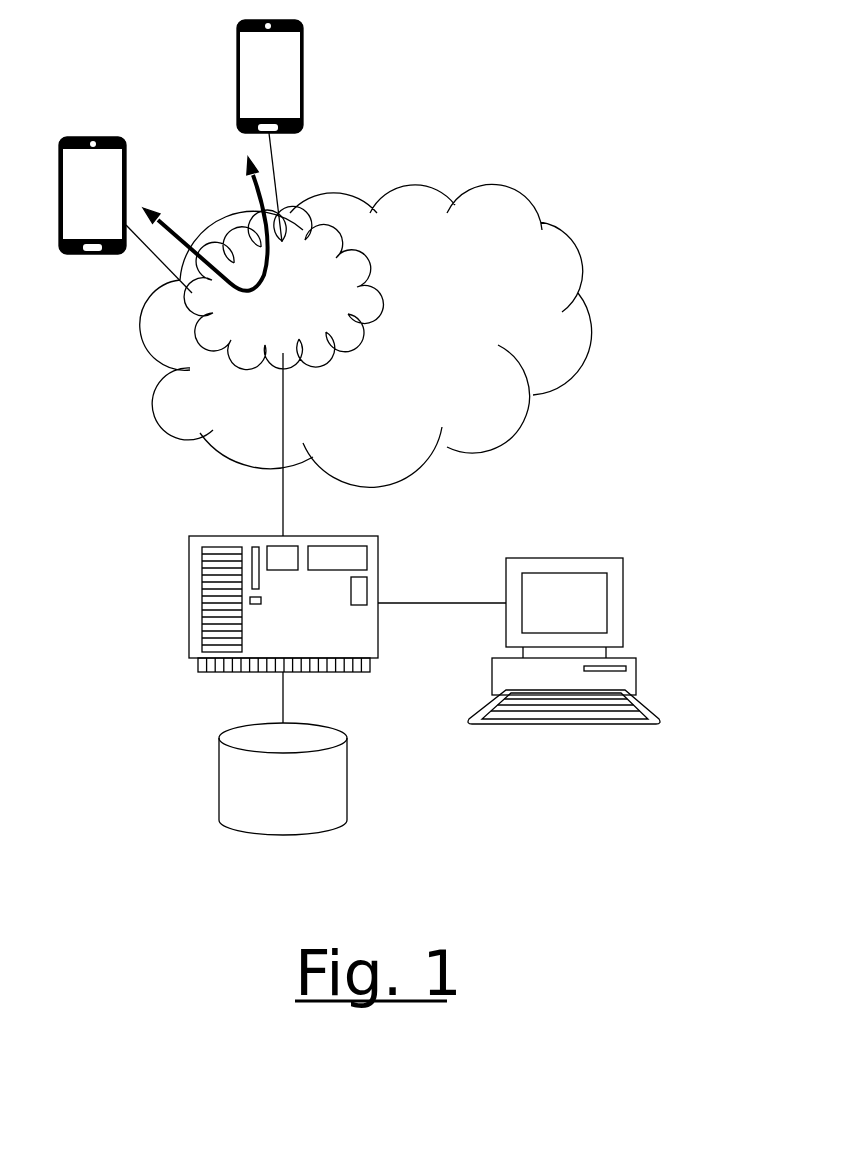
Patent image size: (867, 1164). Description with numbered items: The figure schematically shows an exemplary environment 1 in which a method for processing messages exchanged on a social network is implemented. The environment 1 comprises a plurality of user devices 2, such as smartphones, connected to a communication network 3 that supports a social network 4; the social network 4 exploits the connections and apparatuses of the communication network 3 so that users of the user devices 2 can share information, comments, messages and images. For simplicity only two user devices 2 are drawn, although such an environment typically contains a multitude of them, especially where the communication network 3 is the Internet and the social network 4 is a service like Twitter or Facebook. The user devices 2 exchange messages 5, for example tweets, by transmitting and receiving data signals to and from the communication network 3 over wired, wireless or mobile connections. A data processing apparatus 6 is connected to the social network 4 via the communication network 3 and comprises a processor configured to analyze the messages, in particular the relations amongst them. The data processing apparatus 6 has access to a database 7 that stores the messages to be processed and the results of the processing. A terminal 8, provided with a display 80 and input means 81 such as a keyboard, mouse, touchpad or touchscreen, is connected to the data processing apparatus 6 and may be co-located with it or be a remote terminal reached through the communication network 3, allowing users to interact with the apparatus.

The exemplary environment 1 is at (509, 118).
The user devices 2 is at (137, 119).
The communication network 3 is at (366, 335).
The social network 4 is at (283, 287).
The messages 5 is at (180, 238).
The data processing apparatus 6 is at (189, 603).
The database 7 is at (219, 778).
The terminal 8 is at (625, 531).
The display 80 is at (623, 602).
The input means 81 is at (563, 723).